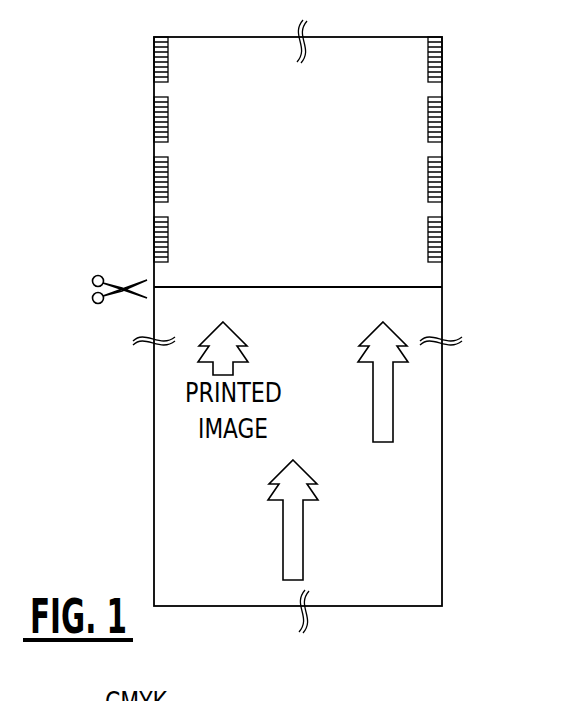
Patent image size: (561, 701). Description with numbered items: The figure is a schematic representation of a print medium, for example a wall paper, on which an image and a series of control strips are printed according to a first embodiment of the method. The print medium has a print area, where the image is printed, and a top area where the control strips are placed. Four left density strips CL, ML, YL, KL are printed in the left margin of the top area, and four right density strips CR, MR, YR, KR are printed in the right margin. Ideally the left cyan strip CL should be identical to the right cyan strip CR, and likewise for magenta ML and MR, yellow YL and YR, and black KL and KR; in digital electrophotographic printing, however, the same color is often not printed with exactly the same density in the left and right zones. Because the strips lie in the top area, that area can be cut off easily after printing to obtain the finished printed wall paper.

The left density strip for cyan CL is at (155, 62).
The left density strip for magenta ML is at (155, 122).
The left density strip for yellow YL is at (155, 182).
The left density strip for black KL is at (155, 247).
The right density strip for cyan CR is at (442, 62).
The right density strip for magenta MR is at (442, 122).
The right density strip for yellow YR is at (442, 182).
The right density strip for black KR is at (442, 247).